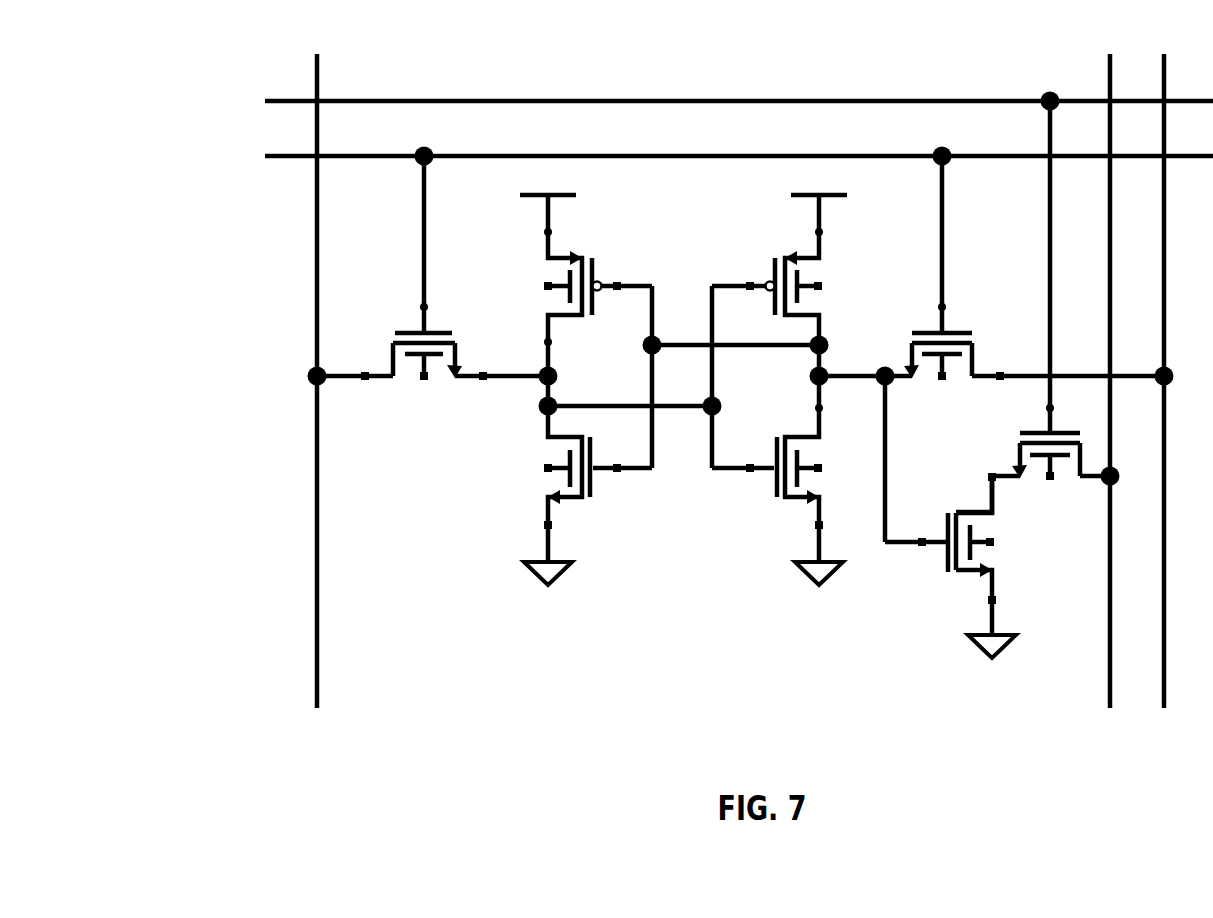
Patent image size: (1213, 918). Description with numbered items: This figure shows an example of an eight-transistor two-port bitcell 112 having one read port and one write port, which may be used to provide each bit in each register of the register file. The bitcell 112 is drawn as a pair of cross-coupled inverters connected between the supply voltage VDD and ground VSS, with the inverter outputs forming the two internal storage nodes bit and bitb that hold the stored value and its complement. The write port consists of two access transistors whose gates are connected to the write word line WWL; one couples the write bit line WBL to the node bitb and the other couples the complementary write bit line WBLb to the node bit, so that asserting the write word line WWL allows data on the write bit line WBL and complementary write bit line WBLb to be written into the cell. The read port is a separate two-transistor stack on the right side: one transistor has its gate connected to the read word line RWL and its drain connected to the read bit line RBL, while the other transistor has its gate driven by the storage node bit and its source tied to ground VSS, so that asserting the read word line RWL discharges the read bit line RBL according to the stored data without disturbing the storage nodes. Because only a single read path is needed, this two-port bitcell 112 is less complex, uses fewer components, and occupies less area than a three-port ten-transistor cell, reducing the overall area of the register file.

The eight-transistor (8T) 2-port 1R1W bitcell 112 is at (219, 104).
The read word line RWL is at (739, 250).
The write word line WWL is at (739, 228).
The write bit line WBL is at (302, 381).
The read bit line RBL is at (1098, 381).
The complementary write bit line WBLb is at (1181, 381).
The supply voltage VDD is at (683, 183).
The ground VSS is at (770, 622).
The bit storage node bit is at (644, 399).
The complementary bit storage node bitb is at (714, 399).